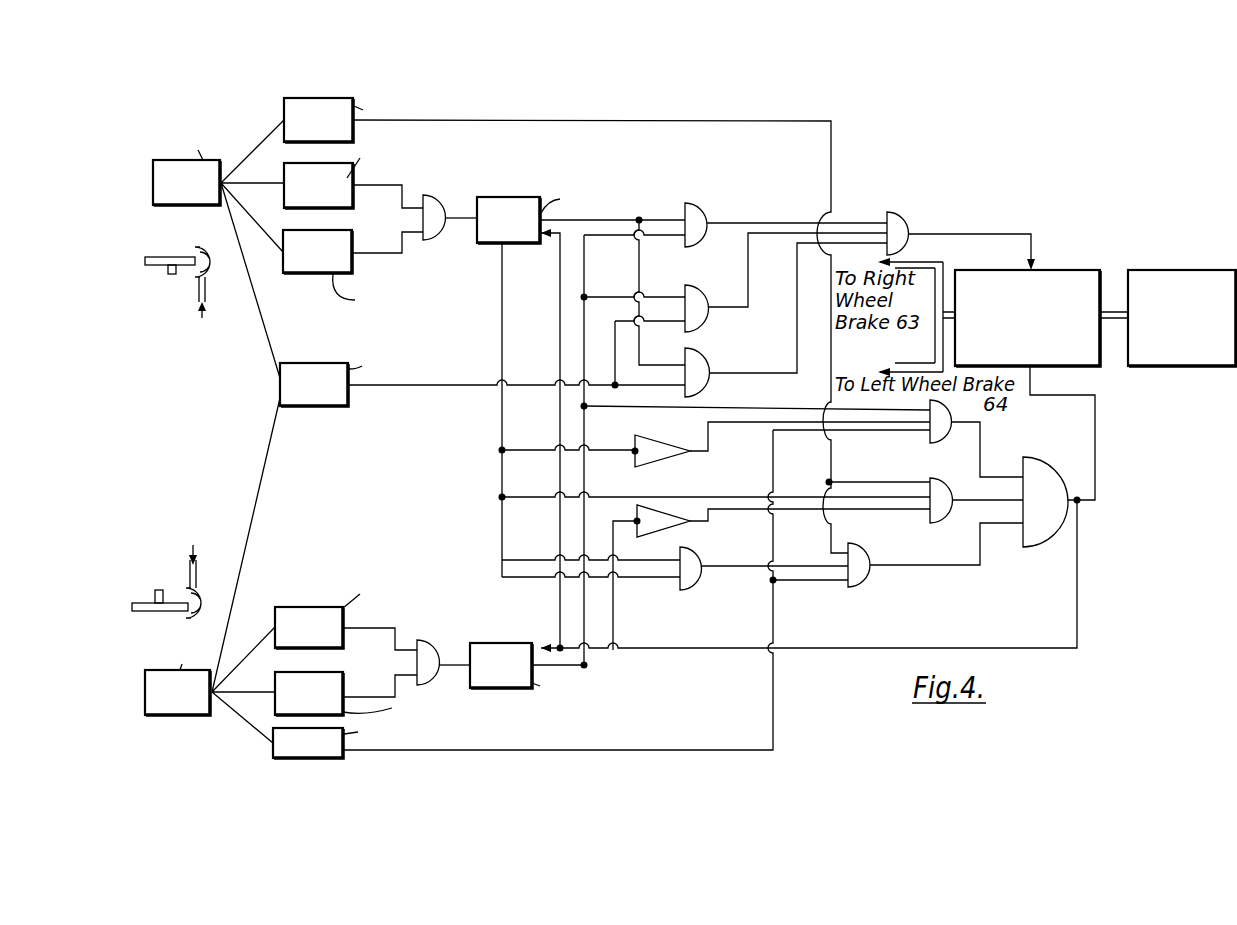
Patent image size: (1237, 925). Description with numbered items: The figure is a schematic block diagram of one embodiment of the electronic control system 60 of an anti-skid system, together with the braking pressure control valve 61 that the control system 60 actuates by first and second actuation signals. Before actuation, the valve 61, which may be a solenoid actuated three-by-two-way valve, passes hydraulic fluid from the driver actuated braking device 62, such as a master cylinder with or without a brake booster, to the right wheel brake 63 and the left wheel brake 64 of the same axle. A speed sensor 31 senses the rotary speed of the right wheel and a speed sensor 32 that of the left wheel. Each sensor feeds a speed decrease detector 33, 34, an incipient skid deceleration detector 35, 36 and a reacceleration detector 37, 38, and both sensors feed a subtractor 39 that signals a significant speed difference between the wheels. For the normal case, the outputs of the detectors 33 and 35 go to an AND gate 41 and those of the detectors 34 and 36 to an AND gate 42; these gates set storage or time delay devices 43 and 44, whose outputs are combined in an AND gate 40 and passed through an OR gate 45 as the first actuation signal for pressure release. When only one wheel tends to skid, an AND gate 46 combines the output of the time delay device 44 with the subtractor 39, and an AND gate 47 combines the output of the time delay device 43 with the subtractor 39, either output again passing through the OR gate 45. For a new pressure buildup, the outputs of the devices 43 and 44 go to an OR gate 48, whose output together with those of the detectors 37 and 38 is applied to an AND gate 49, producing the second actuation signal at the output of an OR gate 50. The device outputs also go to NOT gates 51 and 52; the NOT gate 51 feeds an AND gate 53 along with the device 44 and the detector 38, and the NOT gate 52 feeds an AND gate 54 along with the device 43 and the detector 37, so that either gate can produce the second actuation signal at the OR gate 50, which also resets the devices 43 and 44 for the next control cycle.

The speed sensor 31 is at (206, 206).
The speed sensor 32 is at (145, 690).
The speed decrease detector 33 is at (283, 257).
The speed decrease detector 34 is at (275, 691).
The incipient skid deceleration detector 35 is at (284, 181).
The incipient skid deceleration detector 36 is at (275, 627).
The reacceleration detector 37 is at (284, 118).
The reacceleration detector 38 is at (273, 733).
The subtractor 39 is at (331, 408).
The AND gate 40 is at (697, 222).
The AND gate 41 is at (442, 236).
The AND gate 42 is at (417, 664).
The time delay device 43 is at (523, 208).
The time delay device 44 is at (470, 687).
The OR gate 45 is at (878, 250).
The AND gate 46 is at (700, 305).
The AND gate 47 is at (698, 370).
The OR gate 48 is at (688, 590).
The AND gate 49 is at (850, 586).
The OR gate 50 is at (1040, 482).
The NOT gate 51 is at (663, 452).
The NOT gate 52 is at (660, 516).
The AND gate 53 is at (932, 438).
The AND gate 54 is at (932, 516).
The electronic control system 60 is at (1017, 220).
The braking pressure control valve 61 is at (1078, 268).
The driver actuated braking device 62 is at (1192, 270).
The right wheel brake 63 is at (158, 272).
The left wheel brake 64 is at (146, 584).